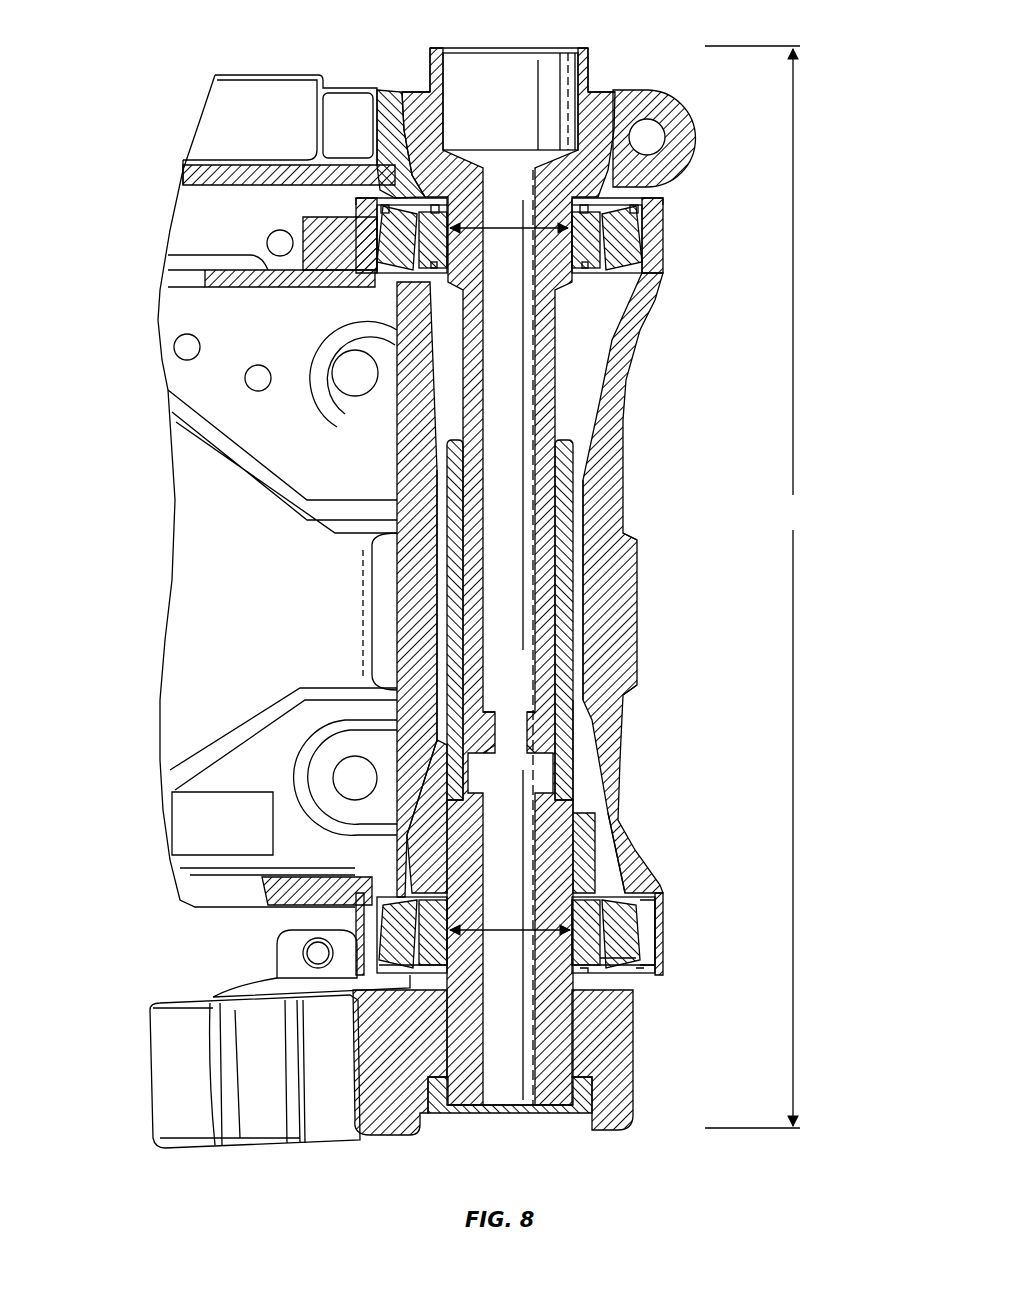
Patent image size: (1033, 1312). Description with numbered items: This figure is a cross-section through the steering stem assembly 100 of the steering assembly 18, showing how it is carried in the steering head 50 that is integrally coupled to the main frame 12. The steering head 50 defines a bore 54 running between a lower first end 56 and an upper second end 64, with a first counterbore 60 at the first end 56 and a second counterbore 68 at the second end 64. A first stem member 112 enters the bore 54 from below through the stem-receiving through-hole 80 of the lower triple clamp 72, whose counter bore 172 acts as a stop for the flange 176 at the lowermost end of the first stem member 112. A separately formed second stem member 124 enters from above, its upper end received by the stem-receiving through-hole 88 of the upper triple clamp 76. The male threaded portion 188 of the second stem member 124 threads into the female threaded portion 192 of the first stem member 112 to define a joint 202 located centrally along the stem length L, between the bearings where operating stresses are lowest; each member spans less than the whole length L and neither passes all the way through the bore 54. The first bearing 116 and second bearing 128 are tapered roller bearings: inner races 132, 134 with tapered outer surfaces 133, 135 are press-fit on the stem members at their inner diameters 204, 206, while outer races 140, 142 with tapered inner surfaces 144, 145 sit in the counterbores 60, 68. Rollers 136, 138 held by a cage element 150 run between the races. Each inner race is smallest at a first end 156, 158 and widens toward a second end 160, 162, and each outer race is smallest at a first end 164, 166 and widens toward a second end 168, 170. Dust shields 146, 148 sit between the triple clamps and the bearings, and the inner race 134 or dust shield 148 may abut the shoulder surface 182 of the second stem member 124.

The main frame 12 is at (225, 572).
The steering assembly 18 is at (125, 82).
The steering head 50 is at (410, 613).
The bore 54 is at (437, 585).
The first end 56 is at (660, 965).
The first counterbore 60 is at (640, 908).
The second end 64 is at (665, 228).
The second counterbore 68 is at (648, 275).
The lower triple clamp 72 is at (325, 1125).
The upper triple clamp 76 is at (665, 105).
The stem-receiving through-hole 80 is at (460, 1110).
The stem-receiving through-hole 88 is at (590, 120).
The steering stem assembly 100 is at (405, 52).
The first stem member 112 is at (552, 840).
The first bearing 116 is at (623, 893).
The second stem member 124 is at (605, 345).
The second bearing 128 is at (668, 195).
The inner race 132 is at (633, 980).
The tapered outer surface 133 is at (618, 884).
The inner race 134 is at (572, 232).
The tapered outer surface 135 is at (610, 325).
The rollers 136 is at (612, 918).
The rollers 138 is at (575, 205).
The outer race 140 is at (642, 930).
The outer race 142 is at (640, 236).
The tapered inner surface 144 is at (640, 947).
The tapered inner surface 145 is at (380, 252).
The dust shield 146 is at (630, 975).
The dust shield 148 is at (640, 192).
The cage element 150 is at (445, 290).
The first end 156 is at (395, 862).
The first end 158 is at (390, 335).
The second end 160 is at (400, 1005).
The second end 162 is at (430, 185).
The first end 164 is at (300, 907).
The first end 166 is at (378, 277).
The second end 168 is at (277, 968).
The second end 170 is at (395, 185).
The counter bore 172 is at (603, 1060).
The flange 176 is at (565, 1108).
The shoulder surface 182 is at (470, 228).
The male threaded portion 188 is at (575, 460).
The female threaded portion 192 is at (540, 565).
The joint 202 is at (583, 622).
The inner diameter 204 is at (520, 932).
The inner diameter 206 is at (520, 232).
The stem length L is at (752, 587).